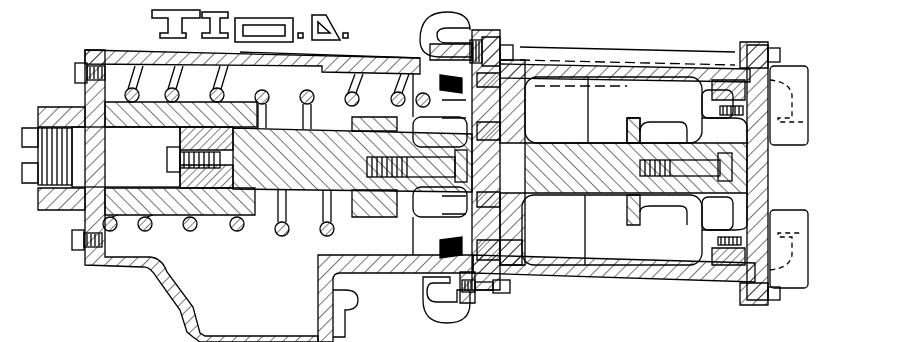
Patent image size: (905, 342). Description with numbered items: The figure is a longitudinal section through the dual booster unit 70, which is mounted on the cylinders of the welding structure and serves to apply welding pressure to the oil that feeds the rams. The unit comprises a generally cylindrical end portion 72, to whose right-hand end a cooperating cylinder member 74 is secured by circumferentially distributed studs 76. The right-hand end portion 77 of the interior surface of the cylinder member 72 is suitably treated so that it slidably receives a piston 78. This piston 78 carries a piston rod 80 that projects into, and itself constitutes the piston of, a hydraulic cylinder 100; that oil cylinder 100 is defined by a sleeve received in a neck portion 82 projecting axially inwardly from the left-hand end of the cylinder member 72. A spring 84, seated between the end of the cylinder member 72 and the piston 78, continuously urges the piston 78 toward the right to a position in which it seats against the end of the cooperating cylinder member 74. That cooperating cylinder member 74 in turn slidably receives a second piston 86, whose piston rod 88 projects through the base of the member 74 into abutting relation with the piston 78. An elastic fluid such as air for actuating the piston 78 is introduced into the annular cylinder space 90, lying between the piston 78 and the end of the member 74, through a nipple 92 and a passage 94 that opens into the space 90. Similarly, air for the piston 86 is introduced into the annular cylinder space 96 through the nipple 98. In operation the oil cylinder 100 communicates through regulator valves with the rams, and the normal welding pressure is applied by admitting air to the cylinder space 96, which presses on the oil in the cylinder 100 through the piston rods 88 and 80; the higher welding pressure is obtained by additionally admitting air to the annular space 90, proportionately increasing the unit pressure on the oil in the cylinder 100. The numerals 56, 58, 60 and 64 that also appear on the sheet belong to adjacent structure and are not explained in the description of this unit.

The dual booster unit 70 is at (373, 56).
The cylindrical end portion 72 is at (348, 50).
The cooperating cylinder member 74 is at (623, 67).
The studs 76 is at (513, 40).
The right-hand end portion 77 is at (358, 75).
The piston 78 is at (432, 38).
The piston rod 80 is at (267, 215).
The neck portion 82 is at (190, 103).
The spring 84 is at (233, 235).
The piston 86 is at (740, 150).
The piston rod 88 is at (543, 195).
The annular cylinder space 90 is at (475, 253).
The nipple 92 is at (798, 63).
The passage 94 is at (548, 47).
The annular cylinder space 96 is at (733, 270).
The nipple 98 is at (793, 210).
The hydraulic cylinder 100 is at (150, 171).
The member 56 is at (633, 341).
The member 58 is at (668, 341).
The member 60 is at (594, 341).
The member 64 is at (615, 340).